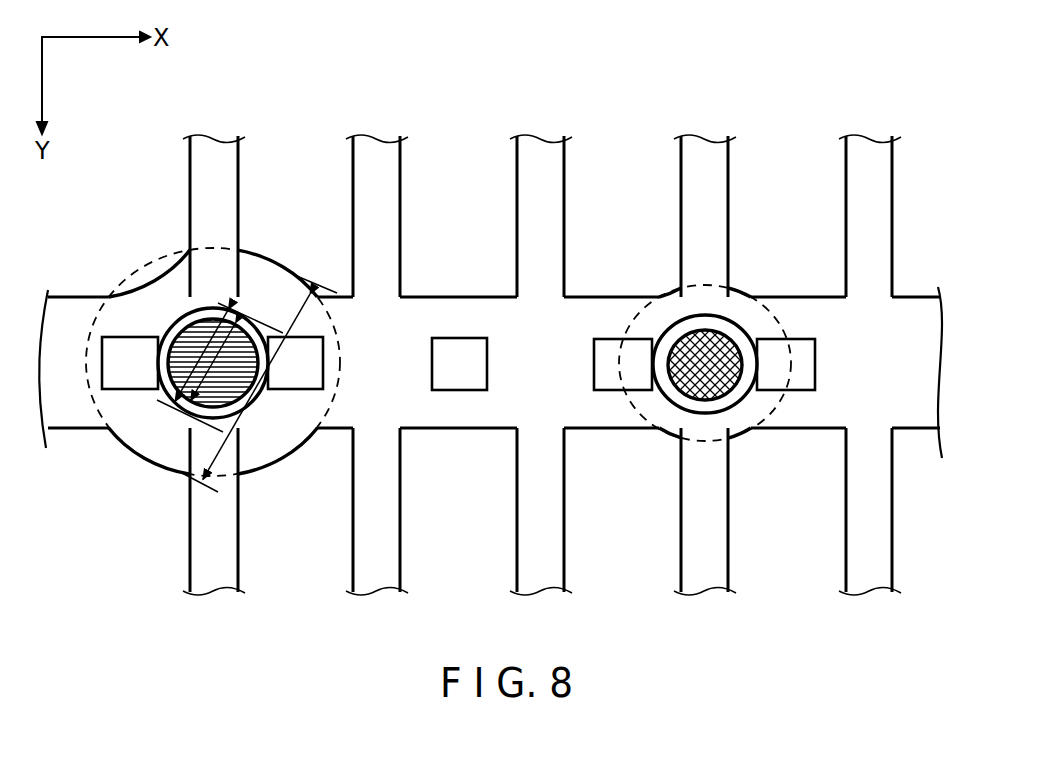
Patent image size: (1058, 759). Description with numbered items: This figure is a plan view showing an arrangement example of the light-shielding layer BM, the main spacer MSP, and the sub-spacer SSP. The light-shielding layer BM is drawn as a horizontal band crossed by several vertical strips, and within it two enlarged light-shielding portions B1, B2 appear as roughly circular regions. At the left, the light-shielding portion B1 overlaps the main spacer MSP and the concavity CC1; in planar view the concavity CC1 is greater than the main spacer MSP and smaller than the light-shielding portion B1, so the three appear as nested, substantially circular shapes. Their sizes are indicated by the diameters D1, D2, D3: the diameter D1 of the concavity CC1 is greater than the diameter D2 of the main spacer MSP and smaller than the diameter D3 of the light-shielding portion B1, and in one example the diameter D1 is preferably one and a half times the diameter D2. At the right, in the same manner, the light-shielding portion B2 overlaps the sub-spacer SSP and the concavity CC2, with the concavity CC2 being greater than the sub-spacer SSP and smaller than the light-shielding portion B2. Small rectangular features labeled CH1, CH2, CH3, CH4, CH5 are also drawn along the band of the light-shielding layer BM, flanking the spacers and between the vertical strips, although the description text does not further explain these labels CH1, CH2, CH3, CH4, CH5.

The light-shielding layer BM is at (73, 433).
The light-shielding portion B1 is at (114, 426).
The light-shielding portion B2 is at (670, 434).
The concavity CC1 is at (160, 328).
The concavity CC2 is at (686, 317).
The main spacer MSP is at (192, 322).
The sub-spacer SSP is at (724, 328).
The first contact hole CH1 is at (110, 336).
The second contact hole CH2 is at (293, 392).
The third contact hole CH3 is at (456, 337).
The fourth contact hole CH4 is at (604, 338).
The fifth contact hole CH5 is at (800, 338).
The diameter D1 is at (209, 322).
The diameter D2 is at (234, 344).
The diameter D3 is at (296, 305).